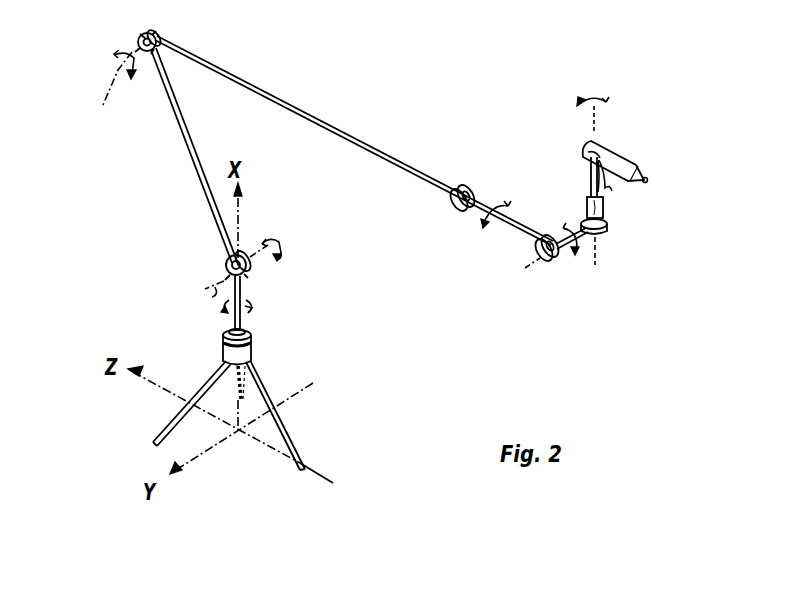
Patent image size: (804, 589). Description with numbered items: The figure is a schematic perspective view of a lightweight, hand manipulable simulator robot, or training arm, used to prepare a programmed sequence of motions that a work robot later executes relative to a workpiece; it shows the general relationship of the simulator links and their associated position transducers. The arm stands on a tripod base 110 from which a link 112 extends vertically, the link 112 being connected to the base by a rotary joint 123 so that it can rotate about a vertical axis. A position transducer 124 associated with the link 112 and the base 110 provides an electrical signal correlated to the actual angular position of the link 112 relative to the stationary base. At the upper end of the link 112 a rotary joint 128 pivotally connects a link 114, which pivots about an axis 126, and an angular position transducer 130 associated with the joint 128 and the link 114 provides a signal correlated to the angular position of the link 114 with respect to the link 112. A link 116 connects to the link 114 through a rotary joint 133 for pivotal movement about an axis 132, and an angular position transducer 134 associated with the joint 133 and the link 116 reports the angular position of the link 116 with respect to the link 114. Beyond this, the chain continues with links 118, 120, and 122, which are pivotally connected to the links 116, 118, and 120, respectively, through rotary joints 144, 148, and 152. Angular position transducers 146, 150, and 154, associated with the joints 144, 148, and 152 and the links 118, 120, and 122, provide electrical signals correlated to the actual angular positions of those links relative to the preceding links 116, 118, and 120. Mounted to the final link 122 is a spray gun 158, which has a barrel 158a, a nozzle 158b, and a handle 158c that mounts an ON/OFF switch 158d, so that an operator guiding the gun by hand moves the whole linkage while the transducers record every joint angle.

The tripod base 110 is at (272, 371).
The link 112 is at (241, 285).
The link 114 is at (190, 147).
The link 116 is at (334, 126).
The link 118 is at (514, 224).
The link 120 is at (579, 252).
The link 122 is at (625, 216).
The rotary joint 123 is at (250, 347).
The position transducer 124 is at (242, 328).
The axis 126 is at (209, 299).
The rotary joint 128 is at (247, 254).
The angular position transducer 130 is at (225, 265).
The axis 132 is at (103, 106).
The rotary joint 133 is at (160, 38).
The angular position transducer 134 is at (146, 68).
The rotary joint 144 is at (460, 188).
The angular position transducer 146 is at (466, 212).
The rotary joint 148 is at (546, 260).
The angular position transducer 150 is at (543, 263).
The rotary joint 152 is at (598, 240).
The angular position transducer 154 is at (612, 227).
The spray gun 158 is at (625, 125).
The barrel 158a is at (618, 153).
The nozzle 158b is at (648, 176).
The handle 158c is at (586, 154).
The ON/OFF switch 158d is at (596, 185).